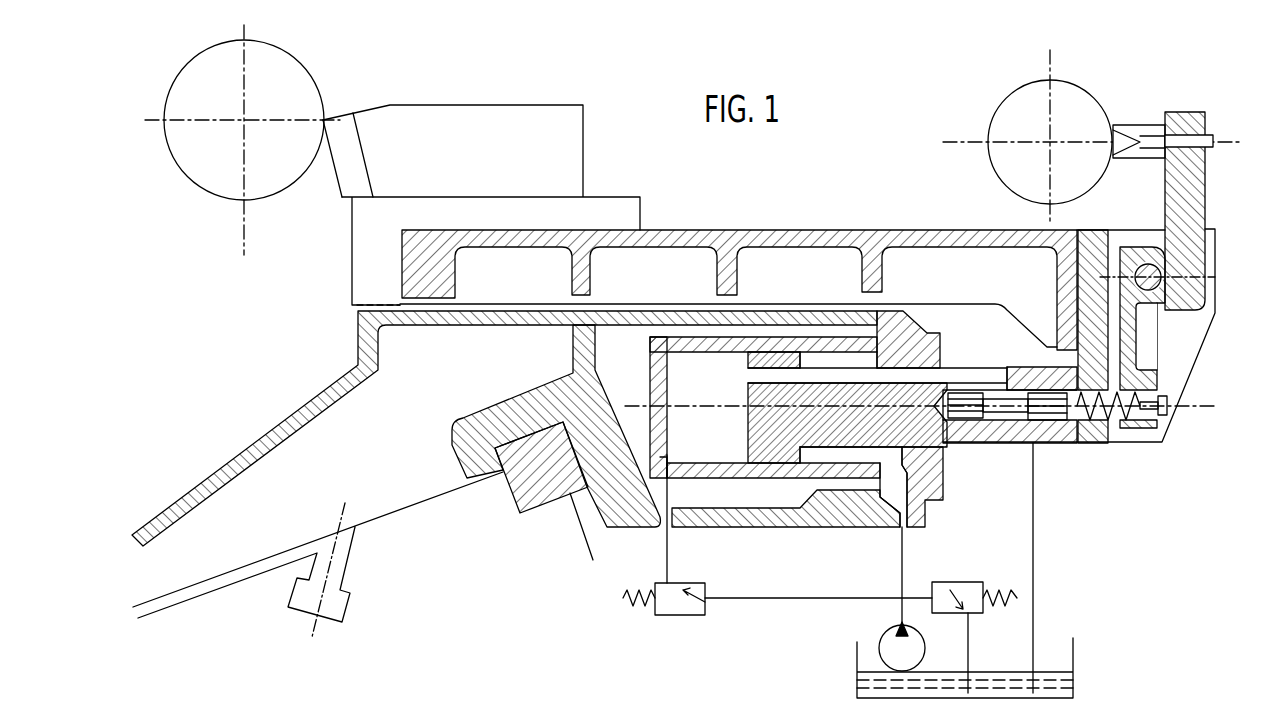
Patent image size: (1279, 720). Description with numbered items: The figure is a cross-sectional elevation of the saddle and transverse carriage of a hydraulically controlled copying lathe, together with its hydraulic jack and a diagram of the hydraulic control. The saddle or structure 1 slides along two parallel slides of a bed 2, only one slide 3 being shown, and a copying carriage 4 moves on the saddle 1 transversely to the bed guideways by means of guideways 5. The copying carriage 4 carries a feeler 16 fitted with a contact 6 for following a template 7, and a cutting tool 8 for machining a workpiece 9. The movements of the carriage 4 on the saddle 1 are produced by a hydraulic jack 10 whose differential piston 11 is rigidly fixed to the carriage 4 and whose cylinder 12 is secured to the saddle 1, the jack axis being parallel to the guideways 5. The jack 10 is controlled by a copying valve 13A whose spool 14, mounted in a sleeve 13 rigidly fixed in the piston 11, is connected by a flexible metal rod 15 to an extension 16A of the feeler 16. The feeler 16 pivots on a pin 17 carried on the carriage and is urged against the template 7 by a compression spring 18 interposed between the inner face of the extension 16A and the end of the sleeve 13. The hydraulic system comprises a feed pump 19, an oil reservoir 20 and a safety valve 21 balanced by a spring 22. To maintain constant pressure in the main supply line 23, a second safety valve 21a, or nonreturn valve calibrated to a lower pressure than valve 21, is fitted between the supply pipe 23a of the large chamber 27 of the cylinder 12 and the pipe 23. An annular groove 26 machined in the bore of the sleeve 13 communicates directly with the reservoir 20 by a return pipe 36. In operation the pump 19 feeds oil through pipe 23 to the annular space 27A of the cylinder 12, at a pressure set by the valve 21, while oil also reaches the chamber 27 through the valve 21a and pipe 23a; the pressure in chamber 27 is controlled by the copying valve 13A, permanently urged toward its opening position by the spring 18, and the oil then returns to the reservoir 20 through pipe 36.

The saddle 1 is at (278, 440).
The bed 2 is at (418, 535).
The slide 3 is at (532, 485).
The copying carriage 4 is at (773, 240).
The guideways 5 is at (353, 295).
The contact 6 is at (1147, 130).
The template 7 is at (1027, 105).
The cutting tool 8 is at (337, 145).
The workpiece 9 is at (212, 58).
The hydraulic jack 10 is at (920, 513).
The differential piston 11 is at (765, 413).
The cylinder 12 is at (767, 478).
The sleeve 13 is at (983, 420).
The copying valve 13A is at (1010, 432).
The spool 14 is at (1050, 420).
The flexible metal rod 15 is at (1100, 420).
The feeler 16 is at (1190, 204).
The extension 16A is at (1152, 347).
The pin 17 is at (1152, 286).
The compression spring 18 is at (1133, 430).
The feed pump 19 is at (895, 645).
The oil reservoir 20 is at (1057, 658).
The safety valve 21 is at (955, 595).
The second safety valve 21a is at (680, 603).
The spring 22 is at (1015, 592).
The main supply line 23 is at (902, 566).
The supply pipe 23a is at (667, 540).
The annular groove 26 is at (1028, 388).
The large chamber 27 is at (688, 388).
The annular space 27A is at (827, 453).
The return pipe 36 is at (1034, 616).